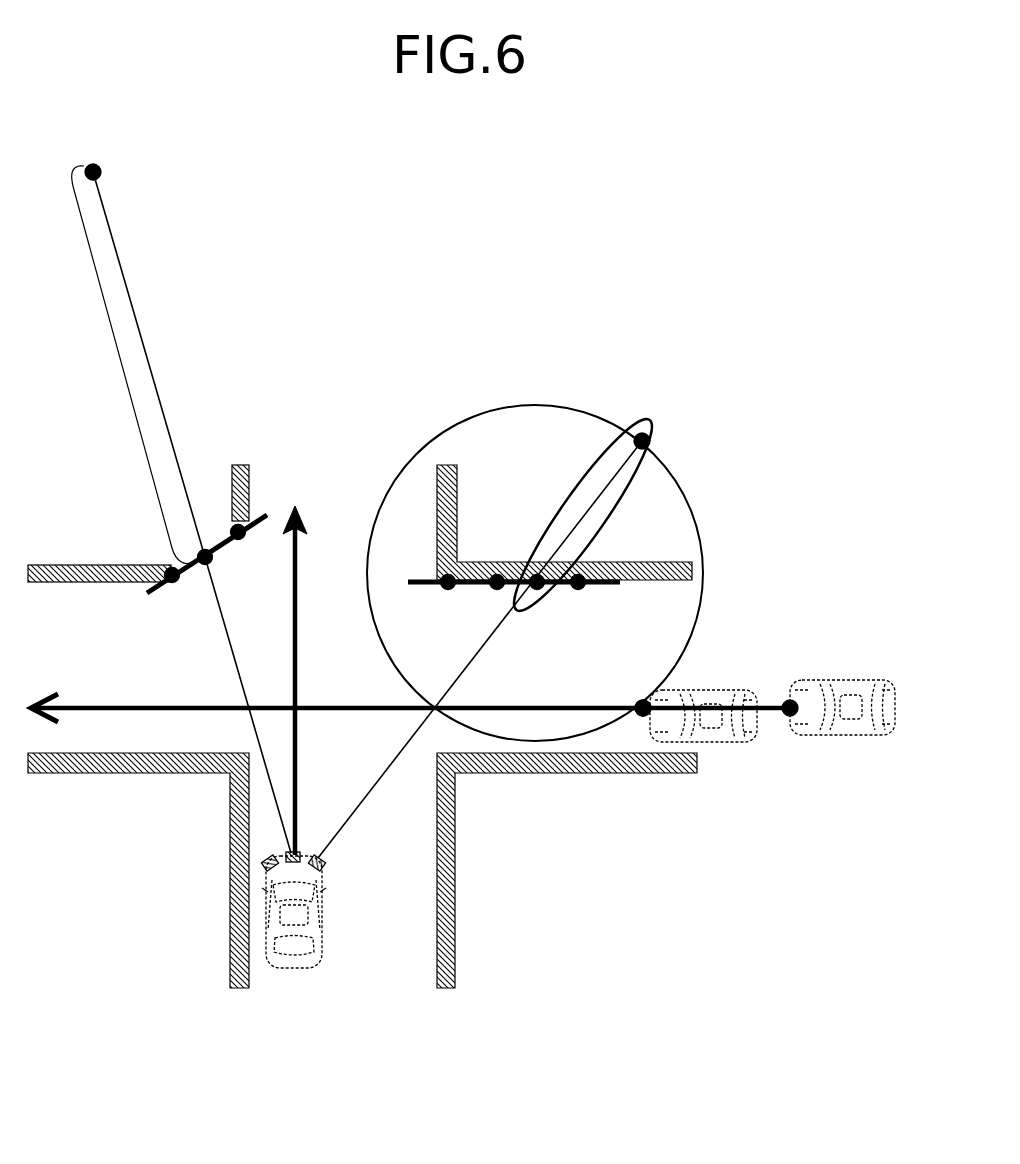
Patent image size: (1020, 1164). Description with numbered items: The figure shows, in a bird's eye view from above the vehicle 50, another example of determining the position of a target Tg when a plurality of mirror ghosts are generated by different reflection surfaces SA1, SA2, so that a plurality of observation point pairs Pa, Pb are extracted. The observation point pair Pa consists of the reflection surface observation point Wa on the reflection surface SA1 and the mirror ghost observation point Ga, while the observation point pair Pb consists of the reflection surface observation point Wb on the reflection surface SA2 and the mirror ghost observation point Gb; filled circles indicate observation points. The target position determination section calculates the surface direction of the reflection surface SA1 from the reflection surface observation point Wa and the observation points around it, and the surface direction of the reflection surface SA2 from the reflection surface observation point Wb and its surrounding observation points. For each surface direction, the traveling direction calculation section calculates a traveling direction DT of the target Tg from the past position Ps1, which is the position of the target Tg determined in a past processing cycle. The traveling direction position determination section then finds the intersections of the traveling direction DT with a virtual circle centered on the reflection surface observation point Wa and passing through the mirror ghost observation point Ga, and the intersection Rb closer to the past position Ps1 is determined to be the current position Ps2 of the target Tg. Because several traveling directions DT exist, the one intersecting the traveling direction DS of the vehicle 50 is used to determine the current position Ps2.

The mirror ghost observation point Gb is at (88, 165).
The observation point pair Pb is at (118, 360).
The reflection surface observation point Wb is at (203, 547).
The reflection surface SA2 is at (258, 527).
The traveling direction of the vehicle DS is at (308, 527).
The traveling direction of the target DT is at (133, 700).
The reflection surface observation point Wa is at (523, 567).
The reflection surface SA1 is at (603, 588).
The mirror ghost observation point Ga is at (635, 423).
The observation point pair Pa is at (655, 422).
The current position Ps2 is at (636, 697).
The intersection Rb is at (659, 673).
The past position Ps1 is at (787, 698).
The target Tg is at (717, 742).
The vehicle 50 is at (322, 912).